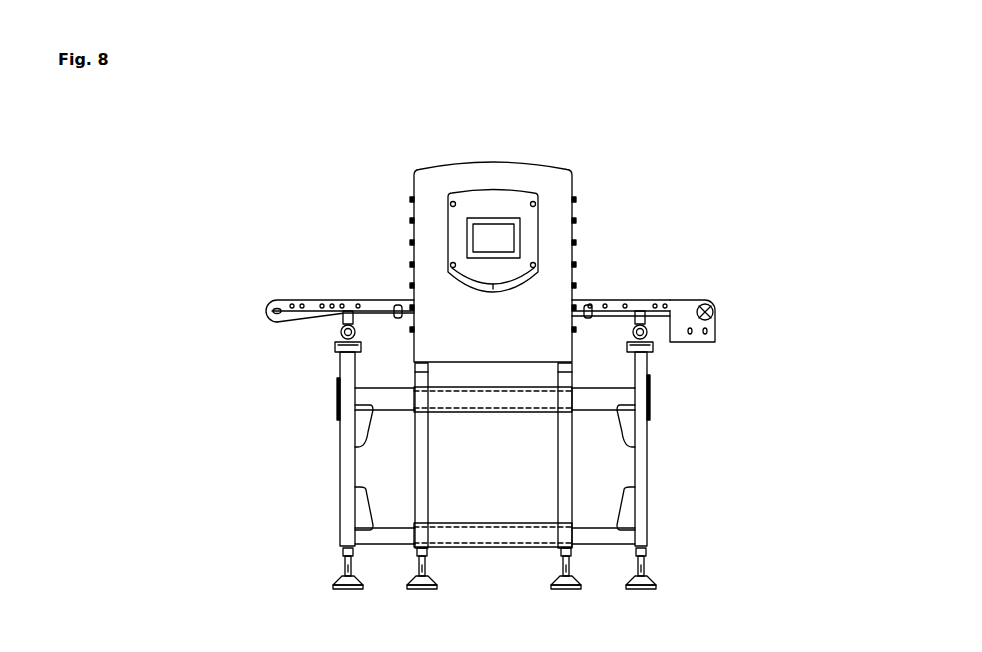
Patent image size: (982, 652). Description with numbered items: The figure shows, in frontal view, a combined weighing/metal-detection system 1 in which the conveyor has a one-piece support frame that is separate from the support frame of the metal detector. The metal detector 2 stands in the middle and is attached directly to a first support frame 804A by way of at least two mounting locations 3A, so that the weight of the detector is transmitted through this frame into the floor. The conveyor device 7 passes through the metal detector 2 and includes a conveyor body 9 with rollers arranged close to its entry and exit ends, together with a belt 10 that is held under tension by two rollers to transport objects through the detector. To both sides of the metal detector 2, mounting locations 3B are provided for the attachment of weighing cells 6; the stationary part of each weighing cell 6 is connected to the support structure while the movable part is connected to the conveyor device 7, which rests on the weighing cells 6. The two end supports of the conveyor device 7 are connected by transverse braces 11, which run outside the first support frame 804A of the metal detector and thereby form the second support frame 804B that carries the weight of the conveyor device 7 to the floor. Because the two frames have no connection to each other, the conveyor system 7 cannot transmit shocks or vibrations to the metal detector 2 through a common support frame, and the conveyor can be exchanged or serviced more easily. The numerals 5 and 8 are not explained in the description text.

The combined weighing/metal-detection system 1 is at (752, 148).
The metal detector 2 is at (473, 147).
The control panel 5 is at (497, 193).
The housing side wall 8 is at (454, 216).
The conveyor device 7 is at (248, 295).
The conveyor body 9 is at (370, 298).
The belt 10 is at (400, 340).
The weighing cell 6 is at (467, 383).
The mounting location 3B is at (472, 434).
The second support frame 804B is at (338, 485).
The first support frame 804A is at (573, 488).
The mounting location 3A is at (418, 370).
The transverse brace 11 is at (602, 388).